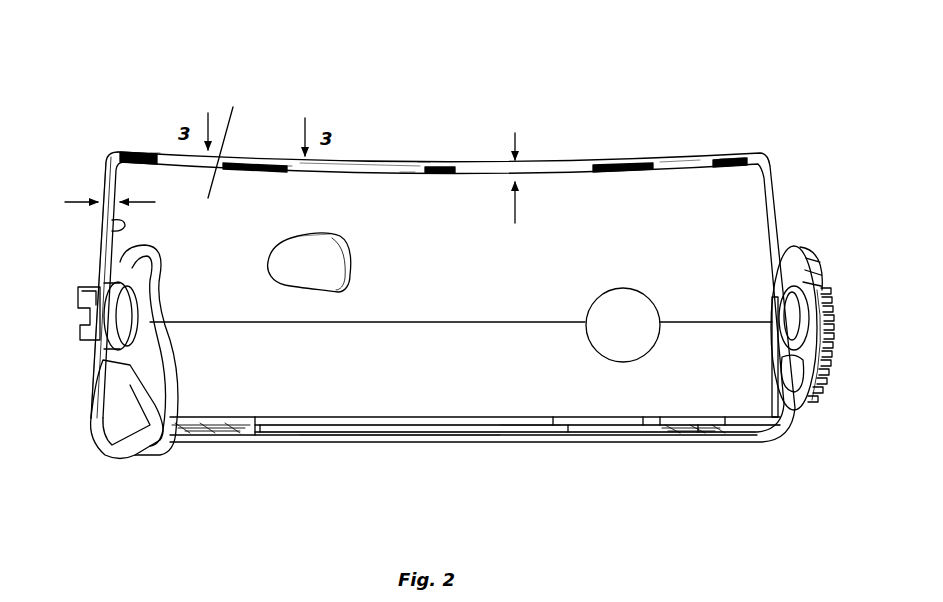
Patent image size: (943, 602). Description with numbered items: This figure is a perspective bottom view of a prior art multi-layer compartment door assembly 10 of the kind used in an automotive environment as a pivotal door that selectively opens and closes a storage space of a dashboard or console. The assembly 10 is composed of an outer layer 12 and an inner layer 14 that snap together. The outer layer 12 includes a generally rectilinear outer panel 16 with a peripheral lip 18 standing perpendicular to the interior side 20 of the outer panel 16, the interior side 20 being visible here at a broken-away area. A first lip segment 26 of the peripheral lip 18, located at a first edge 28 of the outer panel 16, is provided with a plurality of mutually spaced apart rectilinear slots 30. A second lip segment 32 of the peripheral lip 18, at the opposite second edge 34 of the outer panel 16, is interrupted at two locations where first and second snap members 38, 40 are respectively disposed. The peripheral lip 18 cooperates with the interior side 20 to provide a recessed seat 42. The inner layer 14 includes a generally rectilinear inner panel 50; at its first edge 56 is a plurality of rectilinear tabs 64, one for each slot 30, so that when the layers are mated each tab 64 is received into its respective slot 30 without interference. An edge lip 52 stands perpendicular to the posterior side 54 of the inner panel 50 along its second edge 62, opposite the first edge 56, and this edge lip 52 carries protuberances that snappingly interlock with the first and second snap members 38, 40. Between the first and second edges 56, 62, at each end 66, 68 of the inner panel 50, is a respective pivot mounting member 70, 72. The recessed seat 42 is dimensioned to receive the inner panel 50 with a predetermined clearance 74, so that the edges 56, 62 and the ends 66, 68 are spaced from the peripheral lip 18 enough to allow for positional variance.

The multi-layer compartment door assembly 10 is at (678, 85).
The outer layer 12 is at (550, 152).
The inner layer 14 is at (762, 176).
The outer panel 16 is at (338, 268).
The peripheral lip 18 is at (100, 233).
The interior side 20 is at (320, 258).
The first lip segment 26 is at (372, 165).
The first edge 28 is at (420, 162).
The rectilinear slots 30 is at (447, 202).
The second lip segment 32 is at (378, 443).
The second edge 34 is at (500, 445).
The first snap member 38 is at (222, 448).
The second snap member 40 is at (694, 454).
The recessed seat 42 is at (108, 225).
The inner panel 50 is at (675, 212).
The edge lip 52 is at (318, 432).
The posterior side 54 is at (590, 400).
The first edge 56 is at (408, 175).
The second edge 62 is at (540, 430).
The rectilinear tabs 64 is at (163, 222).
The end 66 is at (108, 378).
The end 68 is at (790, 432).
The pivot mounting member 70 is at (110, 458).
The pivot mounting member 72 is at (815, 430).
The predetermined clearance 74 is at (110, 197).